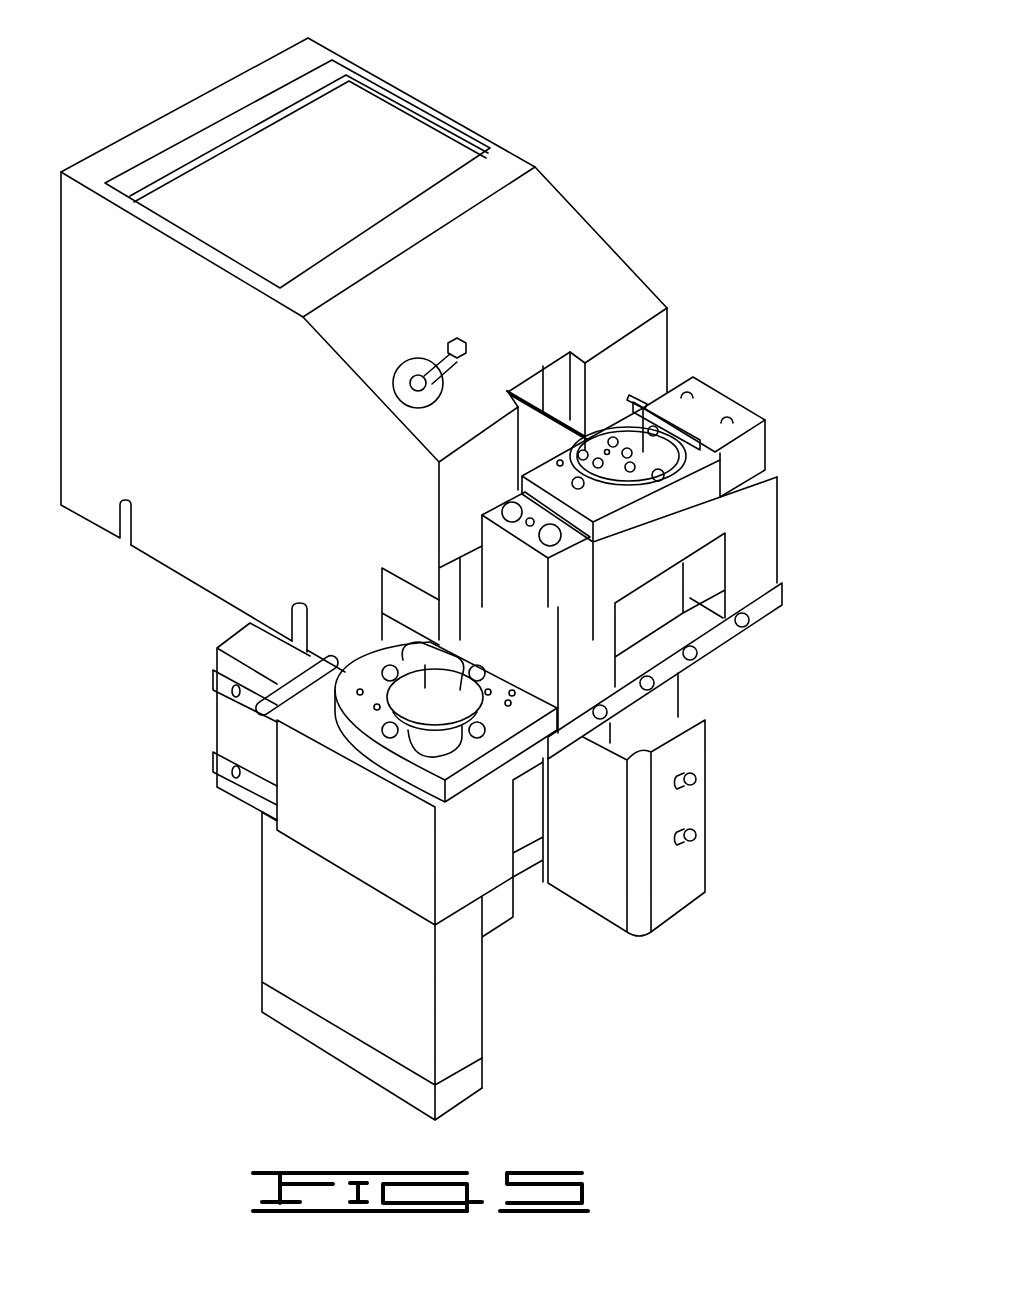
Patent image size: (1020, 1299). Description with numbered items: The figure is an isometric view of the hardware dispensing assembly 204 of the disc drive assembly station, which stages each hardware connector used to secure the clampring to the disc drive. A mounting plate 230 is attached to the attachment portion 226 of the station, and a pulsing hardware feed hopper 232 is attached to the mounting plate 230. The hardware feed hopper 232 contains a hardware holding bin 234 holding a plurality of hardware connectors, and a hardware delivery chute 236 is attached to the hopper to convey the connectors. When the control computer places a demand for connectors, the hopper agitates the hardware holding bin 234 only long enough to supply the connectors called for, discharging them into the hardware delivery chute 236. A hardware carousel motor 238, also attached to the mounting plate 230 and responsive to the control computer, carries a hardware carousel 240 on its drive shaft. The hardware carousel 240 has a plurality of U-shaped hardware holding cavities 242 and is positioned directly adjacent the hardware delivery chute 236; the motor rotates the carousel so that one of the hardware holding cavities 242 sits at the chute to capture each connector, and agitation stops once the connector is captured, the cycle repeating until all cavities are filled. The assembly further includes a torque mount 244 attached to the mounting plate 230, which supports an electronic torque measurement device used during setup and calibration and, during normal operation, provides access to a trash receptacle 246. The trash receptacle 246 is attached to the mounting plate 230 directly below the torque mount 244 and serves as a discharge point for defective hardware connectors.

The hardware dispensing assembly 204 is at (497, 98).
The attachment portion 226 is at (212, 718).
The mounting plate 230 is at (780, 587).
The pulsing hardware feed hopper 232 is at (592, 223).
The hardware holding bin 234 is at (222, 178).
The hardware delivery chute 236 is at (570, 352).
The hardware carousel motor 238 is at (710, 783).
The hardware carousel 240 is at (523, 486).
The U-shaped hardware holding cavities 242 is at (672, 432).
The torque mount 244 is at (498, 757).
The trash receptacle 246 is at (322, 797).